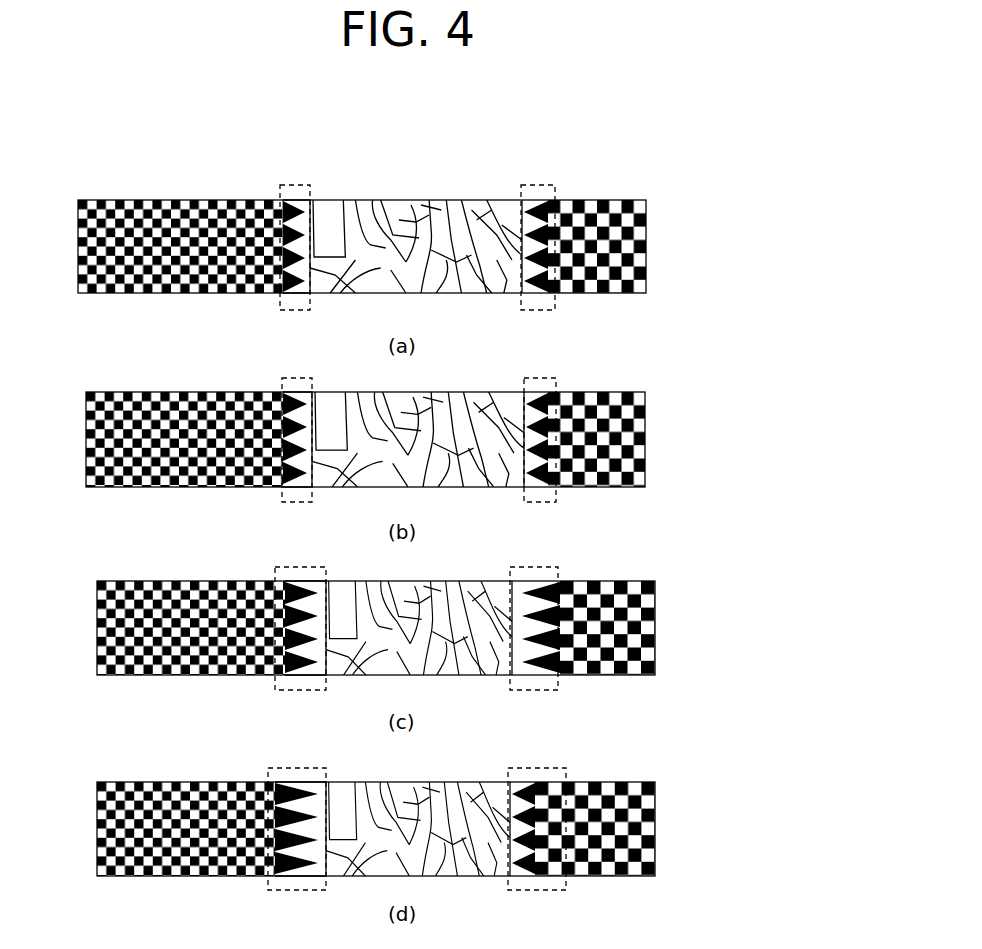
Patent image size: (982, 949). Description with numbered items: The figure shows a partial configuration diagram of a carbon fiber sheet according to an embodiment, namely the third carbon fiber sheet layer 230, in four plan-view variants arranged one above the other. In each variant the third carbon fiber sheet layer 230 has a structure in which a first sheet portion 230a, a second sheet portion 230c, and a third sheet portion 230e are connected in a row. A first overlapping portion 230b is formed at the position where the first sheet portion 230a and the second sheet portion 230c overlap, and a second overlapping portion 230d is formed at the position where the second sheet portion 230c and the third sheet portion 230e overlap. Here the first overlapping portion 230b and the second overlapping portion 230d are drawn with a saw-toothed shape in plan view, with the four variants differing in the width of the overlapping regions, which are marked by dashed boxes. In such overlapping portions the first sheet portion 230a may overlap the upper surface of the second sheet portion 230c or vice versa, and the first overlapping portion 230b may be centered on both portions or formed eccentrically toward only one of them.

The third carbon fiber sheet layer 230 is at (647, 255).
The first sheet portion 230a is at (164, 200).
The first overlapping portion 230b is at (307, 185).
The second sheet portion 230c is at (403, 200).
The second overlapping portion 230d is at (529, 187).
The third sheet portion 230e is at (600, 200).